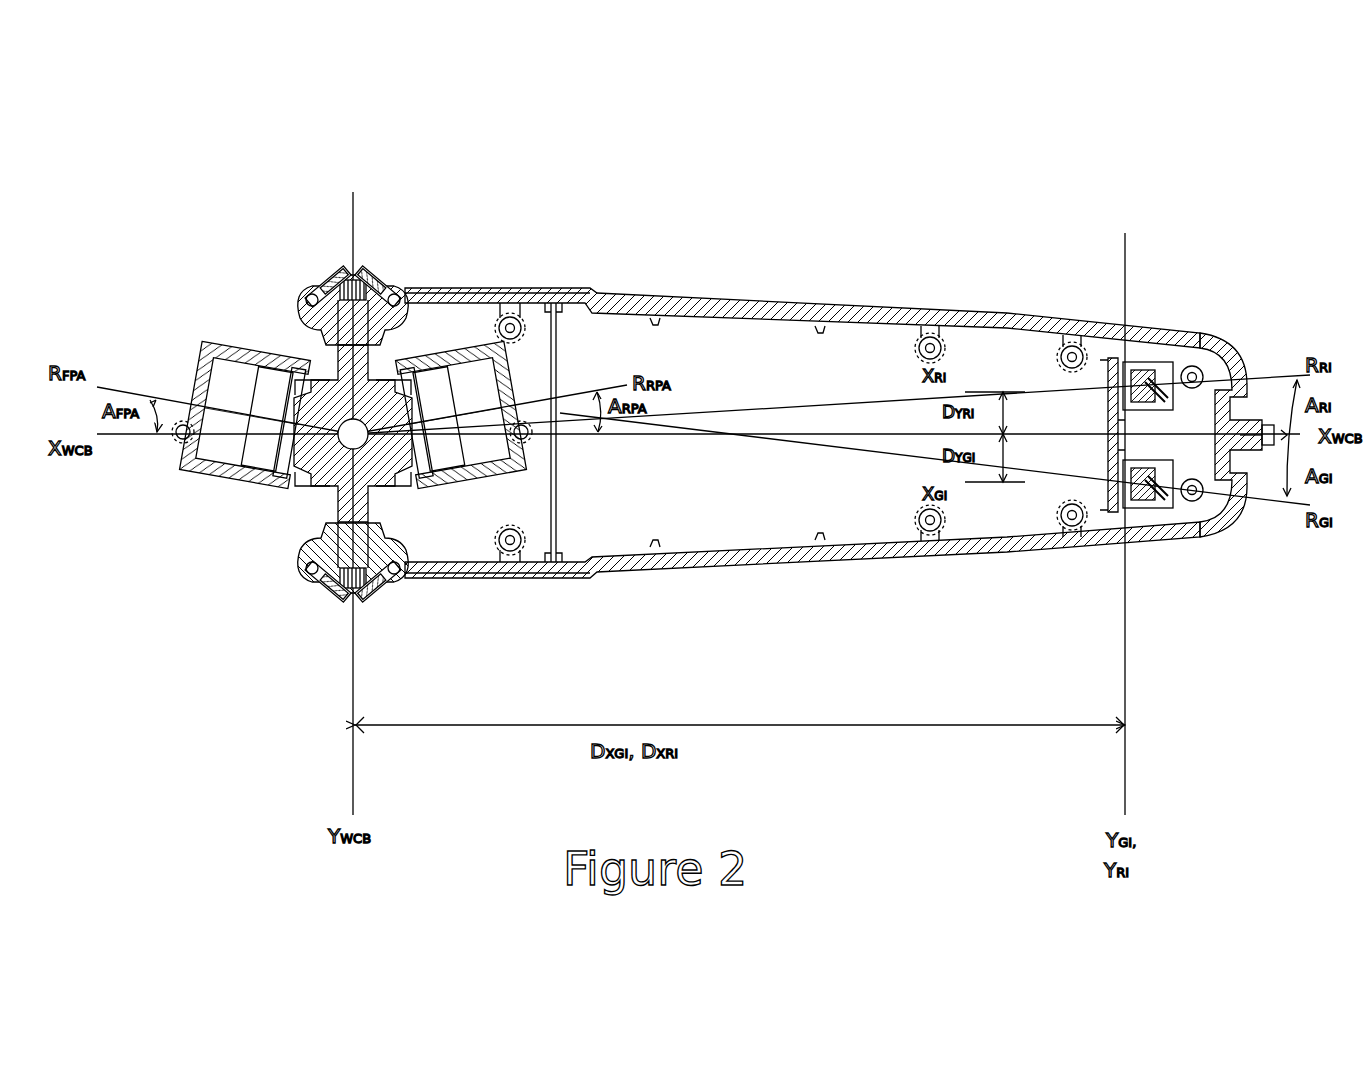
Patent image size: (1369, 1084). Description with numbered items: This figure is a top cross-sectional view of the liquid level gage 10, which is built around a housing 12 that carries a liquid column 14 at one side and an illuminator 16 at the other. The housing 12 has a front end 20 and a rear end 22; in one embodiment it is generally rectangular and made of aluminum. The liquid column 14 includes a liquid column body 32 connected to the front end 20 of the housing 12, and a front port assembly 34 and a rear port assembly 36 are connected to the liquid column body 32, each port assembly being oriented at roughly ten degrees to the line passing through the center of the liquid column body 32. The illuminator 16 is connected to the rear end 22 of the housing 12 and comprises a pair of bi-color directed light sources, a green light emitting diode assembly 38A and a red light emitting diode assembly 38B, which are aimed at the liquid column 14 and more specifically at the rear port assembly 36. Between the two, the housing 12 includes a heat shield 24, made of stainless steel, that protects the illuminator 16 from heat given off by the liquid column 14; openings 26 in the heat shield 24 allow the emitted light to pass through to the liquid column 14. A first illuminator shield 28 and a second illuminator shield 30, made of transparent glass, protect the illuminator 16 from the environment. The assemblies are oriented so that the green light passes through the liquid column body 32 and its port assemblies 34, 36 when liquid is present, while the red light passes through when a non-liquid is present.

The liquid level gage 10 is at (703, 218).
The housing 12 is at (805, 297).
The liquid column 14 is at (295, 333).
The illuminator 16 is at (1145, 322).
The front end 20 is at (292, 265).
The rear end 22 is at (1245, 322).
The heat shield 24 is at (553, 500).
The openings 26 is at (557, 440).
The first illuminator shield 28 is at (1083, 500).
The second illuminator shield 30 is at (1080, 340).
The liquid column body 32 is at (317, 483).
The front port assembly 34 is at (212, 478).
The rear port assembly 36 is at (447, 490).
The green light emitting diode assembly 38A is at (1143, 510).
The red light emitting diode assembly 38B is at (1160, 340).